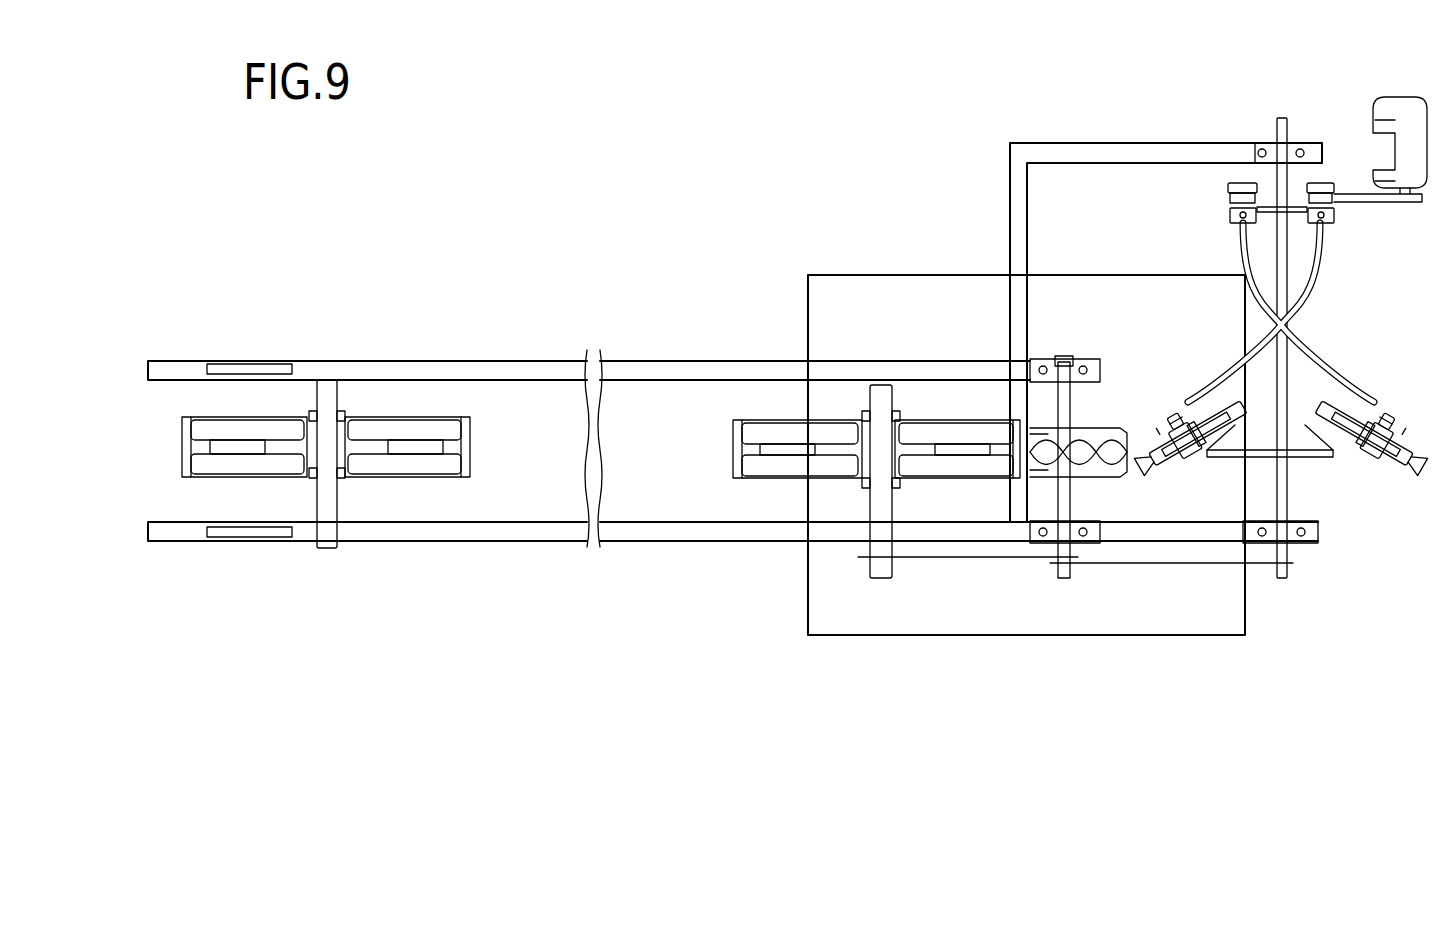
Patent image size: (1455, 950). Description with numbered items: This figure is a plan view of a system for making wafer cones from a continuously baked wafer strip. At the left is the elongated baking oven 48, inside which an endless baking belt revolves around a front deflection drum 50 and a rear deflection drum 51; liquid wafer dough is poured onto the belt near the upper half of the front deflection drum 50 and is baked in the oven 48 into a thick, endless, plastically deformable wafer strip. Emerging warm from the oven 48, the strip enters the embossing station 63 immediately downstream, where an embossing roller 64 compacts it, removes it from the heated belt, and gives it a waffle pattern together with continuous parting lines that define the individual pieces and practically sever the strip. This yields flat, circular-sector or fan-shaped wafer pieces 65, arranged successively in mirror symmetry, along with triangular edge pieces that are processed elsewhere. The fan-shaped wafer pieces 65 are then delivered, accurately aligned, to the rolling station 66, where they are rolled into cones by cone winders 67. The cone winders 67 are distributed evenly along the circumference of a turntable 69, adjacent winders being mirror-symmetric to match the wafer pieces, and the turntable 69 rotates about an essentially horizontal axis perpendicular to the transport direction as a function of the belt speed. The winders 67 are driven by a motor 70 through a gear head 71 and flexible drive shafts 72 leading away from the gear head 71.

The baking oven 48 is at (540, 542).
The front deflection drum 50 is at (795, 462).
The rear deflection drum 51 is at (258, 462).
The embossing station 63 is at (1065, 342).
The embossing roller 64 is at (1082, 478).
The fan-shaped wafer pieces 65 is at (1112, 460).
The rolling station 66 is at (1255, 98).
The cone winder 67 is at (1410, 475).
The turntable 69 is at (1322, 458).
The motor 70 is at (1393, 97).
The gear head 71 is at (1228, 197).
The flexible drive shafts 72 is at (1310, 270).